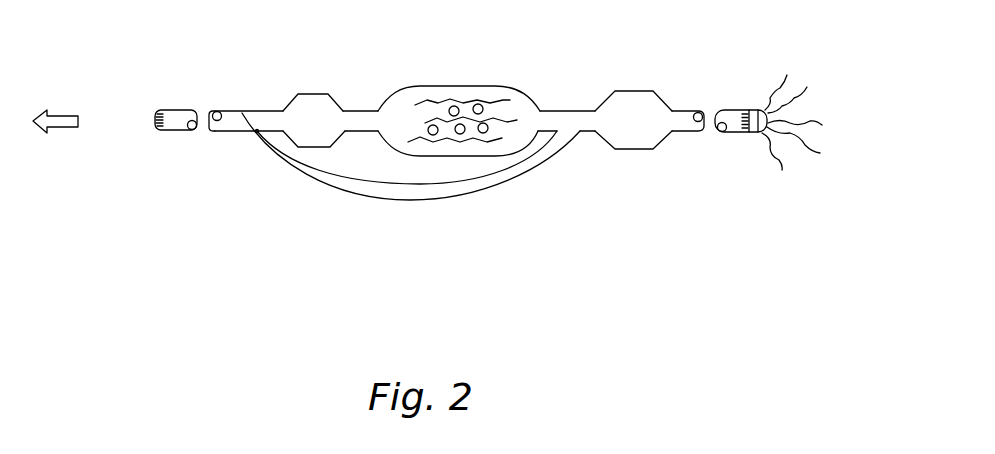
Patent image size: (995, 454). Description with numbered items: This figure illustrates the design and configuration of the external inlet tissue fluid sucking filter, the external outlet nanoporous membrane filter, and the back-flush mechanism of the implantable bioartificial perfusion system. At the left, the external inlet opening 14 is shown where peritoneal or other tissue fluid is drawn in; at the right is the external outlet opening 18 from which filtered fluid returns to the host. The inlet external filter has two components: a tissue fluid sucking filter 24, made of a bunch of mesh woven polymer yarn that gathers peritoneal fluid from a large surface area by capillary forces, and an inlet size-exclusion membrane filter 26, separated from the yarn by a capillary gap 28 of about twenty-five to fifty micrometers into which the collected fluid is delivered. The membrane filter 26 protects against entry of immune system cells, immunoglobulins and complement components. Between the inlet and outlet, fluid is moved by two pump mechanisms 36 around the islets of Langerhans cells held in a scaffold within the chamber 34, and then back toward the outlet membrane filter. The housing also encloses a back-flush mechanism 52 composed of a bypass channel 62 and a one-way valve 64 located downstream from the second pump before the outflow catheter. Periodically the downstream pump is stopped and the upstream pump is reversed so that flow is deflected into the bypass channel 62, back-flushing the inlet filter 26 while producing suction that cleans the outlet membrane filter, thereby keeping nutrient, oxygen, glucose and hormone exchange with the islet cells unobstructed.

The external inlet opening 14 is at (773, 129).
The external outlet opening 18 is at (136, 108).
The tissue fluid sucking filter 24 is at (806, 88).
The inlet size-exclusion membrane filter 26 is at (743, 110).
The capillary gap 28 is at (757, 110).
The chamber 34 is at (456, 86).
The two pump mechanisms 36 is at (310, 94).
The back-flush mechanism 52 is at (402, 200).
The bypass channel 62 is at (470, 189).
The one-way valve 64 is at (246, 131).